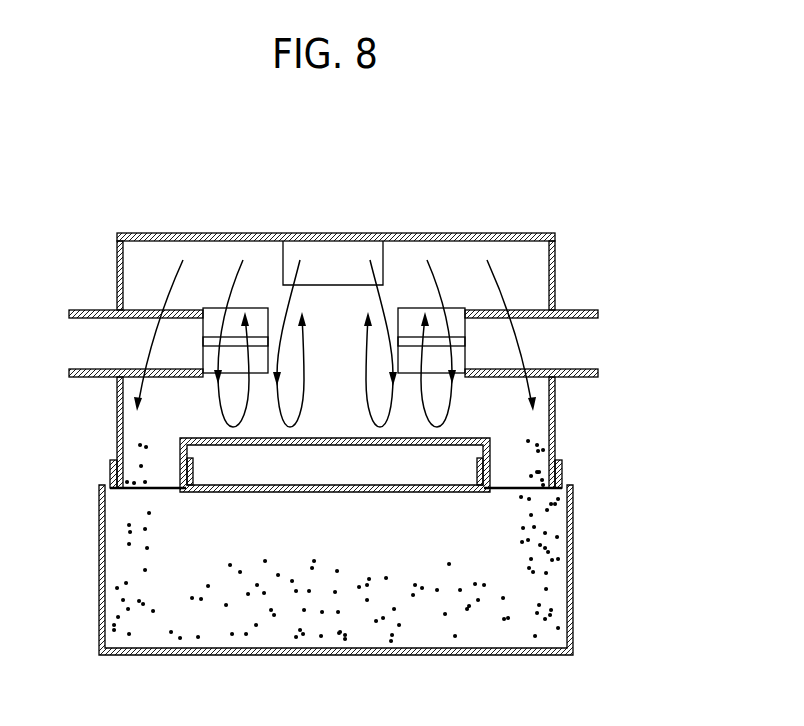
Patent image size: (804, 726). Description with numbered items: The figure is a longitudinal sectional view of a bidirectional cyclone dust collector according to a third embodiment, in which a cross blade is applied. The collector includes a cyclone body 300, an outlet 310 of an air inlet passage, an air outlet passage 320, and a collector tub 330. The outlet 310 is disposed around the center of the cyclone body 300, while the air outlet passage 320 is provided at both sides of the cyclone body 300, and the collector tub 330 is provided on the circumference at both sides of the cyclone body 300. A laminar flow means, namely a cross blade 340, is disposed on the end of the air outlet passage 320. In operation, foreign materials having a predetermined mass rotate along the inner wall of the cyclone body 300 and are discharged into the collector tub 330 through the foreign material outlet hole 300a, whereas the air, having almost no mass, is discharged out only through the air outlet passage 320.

The cyclone body 300 is at (480, 232).
The foreign material outlet hole 300a is at (533, 455).
The outlet of air inlet passage 310 is at (345, 257).
The air outlet passage 320 is at (81, 309).
The collector tub 330 is at (577, 582).
The cross blade 340 is at (216, 303).